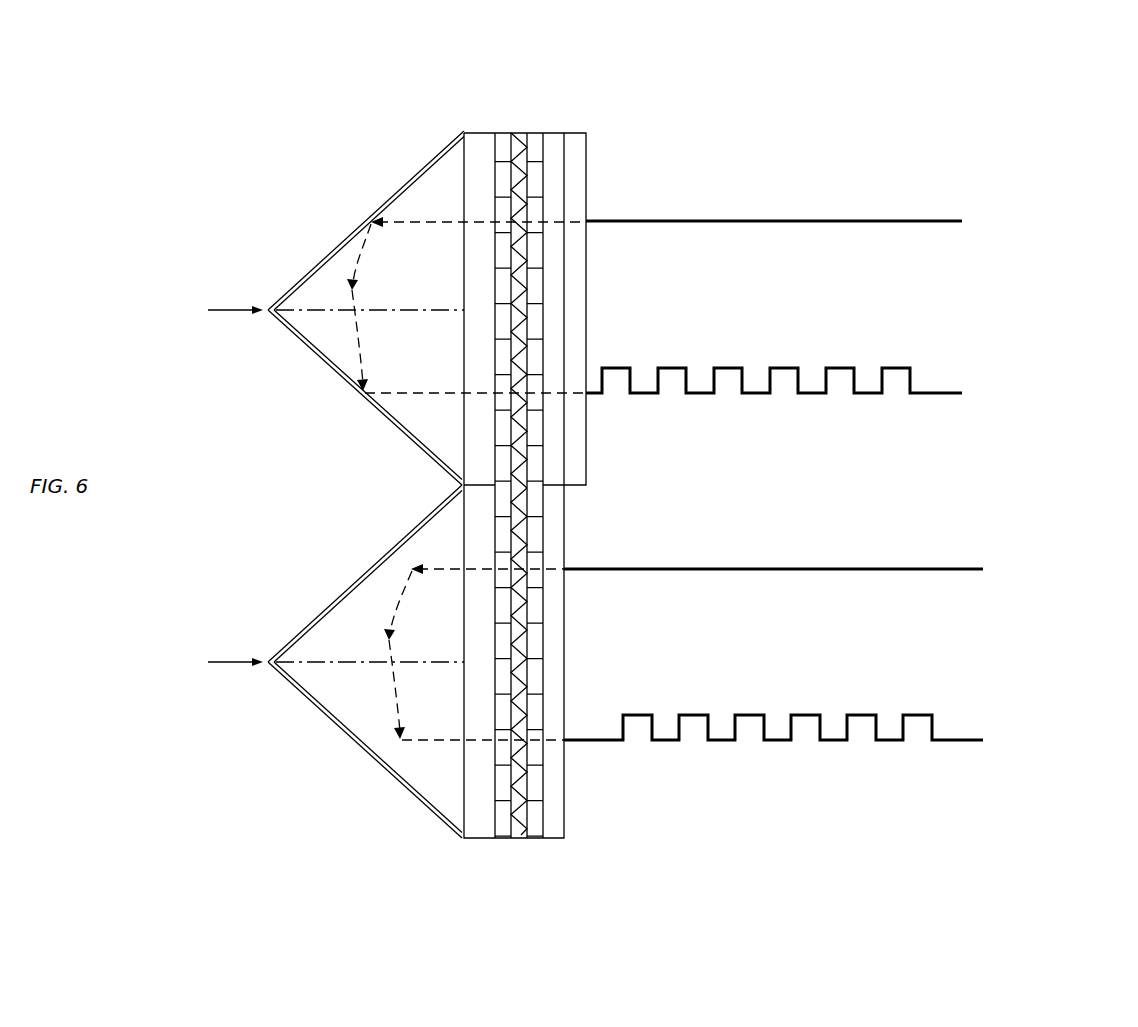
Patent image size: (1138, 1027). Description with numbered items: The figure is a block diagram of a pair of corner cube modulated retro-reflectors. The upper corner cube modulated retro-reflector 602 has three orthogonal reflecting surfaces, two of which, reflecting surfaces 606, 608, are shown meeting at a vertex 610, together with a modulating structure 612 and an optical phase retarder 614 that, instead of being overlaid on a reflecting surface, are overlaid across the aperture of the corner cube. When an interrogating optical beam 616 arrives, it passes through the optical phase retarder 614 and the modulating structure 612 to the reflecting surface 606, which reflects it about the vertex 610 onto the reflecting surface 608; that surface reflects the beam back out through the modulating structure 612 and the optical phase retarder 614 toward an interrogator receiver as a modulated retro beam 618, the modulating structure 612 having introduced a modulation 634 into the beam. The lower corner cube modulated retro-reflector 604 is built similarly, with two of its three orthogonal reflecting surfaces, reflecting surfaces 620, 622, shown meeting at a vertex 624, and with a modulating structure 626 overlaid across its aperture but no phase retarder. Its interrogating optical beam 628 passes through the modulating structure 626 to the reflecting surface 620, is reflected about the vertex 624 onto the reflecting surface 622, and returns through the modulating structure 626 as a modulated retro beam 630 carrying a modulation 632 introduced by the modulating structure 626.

The corner cube modulated retro-reflector 602 is at (298, 270).
The corner cube modulated retro-reflector 604 is at (298, 704).
The reflecting surface 606 is at (408, 191).
The reflecting surface 608 is at (302, 325).
The vertex 610 is at (232, 308).
The modulating structure 612 is at (536, 133).
The optical phase retarder 614 is at (587, 285).
The interrogating optical beam 616 is at (775, 221).
The modulated retro beam 618 is at (731, 359).
The reflecting surface 620 is at (300, 647).
The reflecting surface 622 is at (407, 778).
The vertex 624 is at (232, 664).
The modulating structure 626 is at (565, 819).
The interrogating optical beam 628 is at (775, 569).
The modulated retro beam 630 is at (760, 751).
The modulation 632 is at (873, 764).
The modulation 634 is at (853, 344).